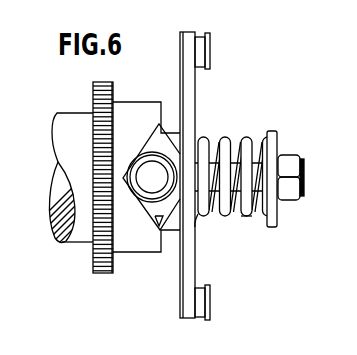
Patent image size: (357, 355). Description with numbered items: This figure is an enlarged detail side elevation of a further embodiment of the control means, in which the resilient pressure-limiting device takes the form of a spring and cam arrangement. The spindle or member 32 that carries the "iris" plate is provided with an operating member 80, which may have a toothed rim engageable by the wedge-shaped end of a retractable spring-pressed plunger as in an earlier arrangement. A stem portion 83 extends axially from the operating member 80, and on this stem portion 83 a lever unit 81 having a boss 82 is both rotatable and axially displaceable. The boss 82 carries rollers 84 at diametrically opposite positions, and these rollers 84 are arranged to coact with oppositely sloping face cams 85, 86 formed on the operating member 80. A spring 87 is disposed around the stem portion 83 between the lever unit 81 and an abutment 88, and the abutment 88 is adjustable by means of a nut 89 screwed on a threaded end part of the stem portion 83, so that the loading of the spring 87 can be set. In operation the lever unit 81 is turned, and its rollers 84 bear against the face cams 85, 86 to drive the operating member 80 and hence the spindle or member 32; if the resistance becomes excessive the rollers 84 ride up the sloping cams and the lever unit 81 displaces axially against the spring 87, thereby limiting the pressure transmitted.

The spindle or member 32 is at (64, 112).
The operating member 80 is at (123, 112).
The lever unit 81 is at (198, 115).
The boss 82 is at (170, 133).
The stem portion 83 is at (235, 162).
The rollers 84 is at (163, 192).
The face cam 85 is at (151, 170).
The face cam 86 is at (157, 222).
The spring 87 is at (250, 217).
The abutment 88 is at (271, 142).
The nut 89 is at (289, 195).